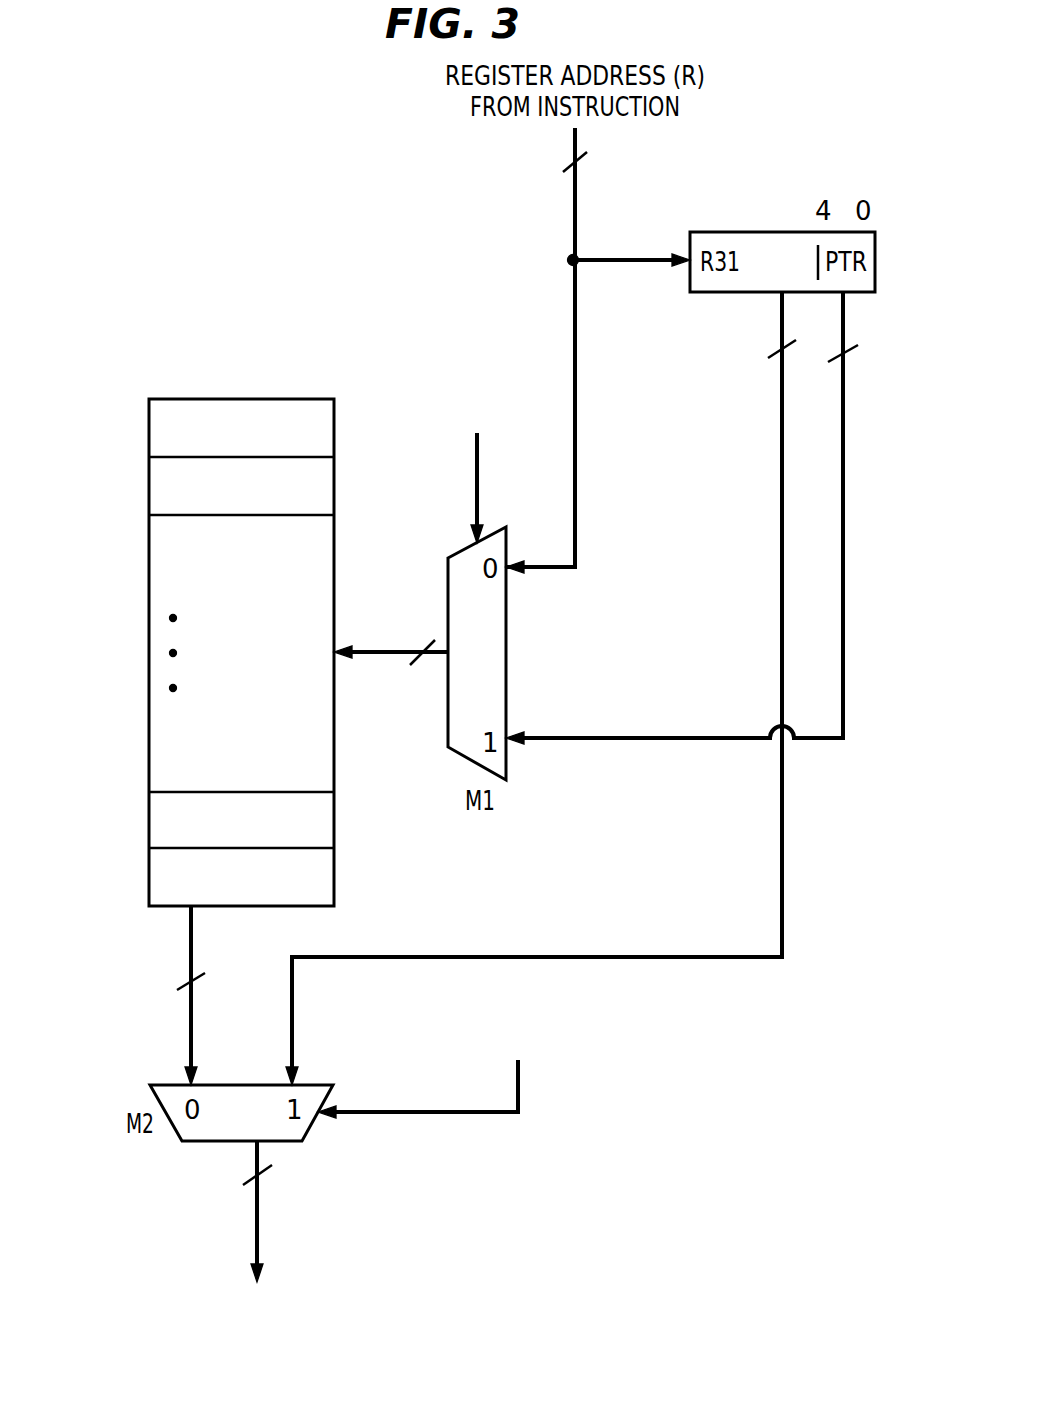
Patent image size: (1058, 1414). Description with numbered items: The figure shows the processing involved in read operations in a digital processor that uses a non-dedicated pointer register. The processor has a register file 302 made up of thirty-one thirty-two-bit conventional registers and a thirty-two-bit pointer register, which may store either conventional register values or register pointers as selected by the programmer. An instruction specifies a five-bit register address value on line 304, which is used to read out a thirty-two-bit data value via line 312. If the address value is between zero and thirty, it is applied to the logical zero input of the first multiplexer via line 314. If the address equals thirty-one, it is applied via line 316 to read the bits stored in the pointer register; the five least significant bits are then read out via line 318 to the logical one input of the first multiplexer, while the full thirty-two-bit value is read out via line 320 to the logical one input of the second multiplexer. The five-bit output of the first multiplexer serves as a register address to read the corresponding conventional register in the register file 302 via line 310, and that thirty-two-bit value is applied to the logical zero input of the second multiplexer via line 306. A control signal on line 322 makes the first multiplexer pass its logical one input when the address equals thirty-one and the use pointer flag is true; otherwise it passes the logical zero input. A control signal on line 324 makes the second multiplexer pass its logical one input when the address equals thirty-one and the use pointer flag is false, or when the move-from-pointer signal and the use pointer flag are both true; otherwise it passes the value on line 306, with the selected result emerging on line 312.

The register file 302 is at (140, 585).
The register address line 304 is at (577, 218).
The register file output line 306 is at (190, 1030).
The mux M1 output line 310 is at (382, 655).
The data output line 312 is at (257, 1222).
The mux M1 logical 0 input line 314 is at (577, 400).
The pointer register read line 316 is at (618, 263).
The pointer register LSB line 318 is at (847, 567).
The pointer register full value line 320 is at (781, 567).
The mux M1 control signal line 322 is at (475, 488).
The mux M2 control signal line 324 is at (440, 1115).